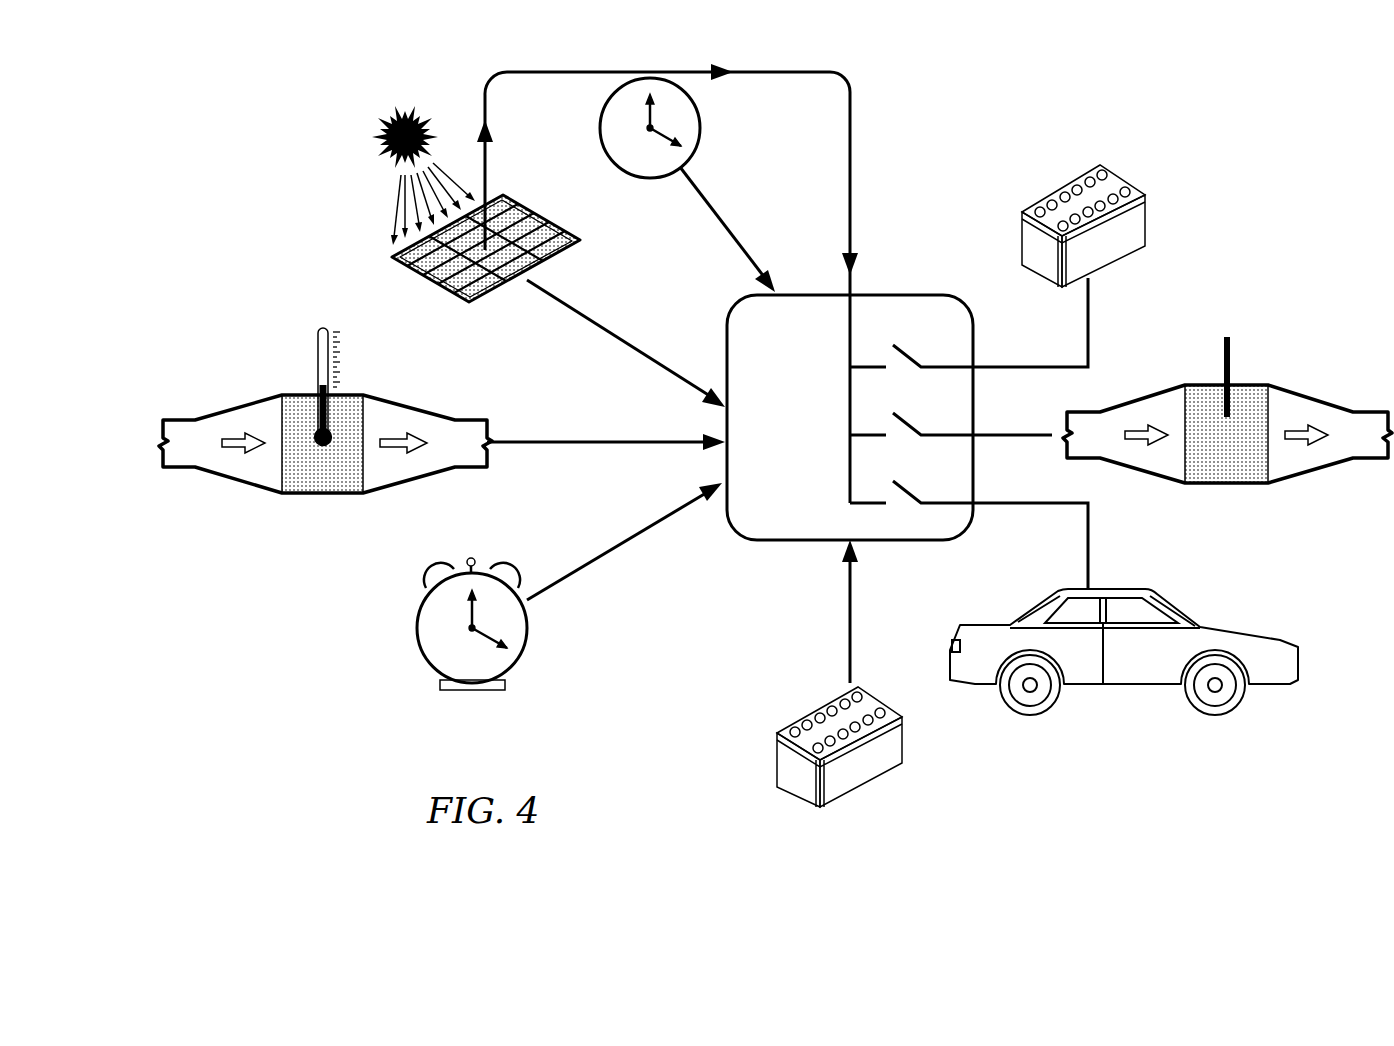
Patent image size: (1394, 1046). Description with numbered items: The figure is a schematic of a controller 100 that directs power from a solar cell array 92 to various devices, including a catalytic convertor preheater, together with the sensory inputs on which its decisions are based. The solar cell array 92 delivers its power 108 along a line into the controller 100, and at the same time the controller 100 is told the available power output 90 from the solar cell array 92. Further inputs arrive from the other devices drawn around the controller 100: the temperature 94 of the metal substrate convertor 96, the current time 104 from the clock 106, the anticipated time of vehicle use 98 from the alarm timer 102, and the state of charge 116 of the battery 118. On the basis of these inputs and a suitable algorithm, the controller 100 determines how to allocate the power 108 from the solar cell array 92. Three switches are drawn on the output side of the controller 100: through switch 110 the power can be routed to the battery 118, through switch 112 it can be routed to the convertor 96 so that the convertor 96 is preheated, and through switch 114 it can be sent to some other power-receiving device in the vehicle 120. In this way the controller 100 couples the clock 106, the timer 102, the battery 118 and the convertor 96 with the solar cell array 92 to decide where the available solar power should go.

The available power output 90 is at (643, 334).
The solar cell array 92 is at (392, 257).
The temperature 94 is at (593, 437).
The metal substrate convertor 96 is at (250, 404).
The anticipated time of vehicle use 98 is at (628, 534).
The controller 100 is at (807, 417).
The timer 102 is at (418, 633).
The current time 104 is at (762, 207).
The clock 106 is at (700, 128).
The power 108 is at (665, 67).
The switch 110 is at (967, 363).
The switch 112 is at (967, 431).
The switch 114 is at (967, 498).
The state of charge 116 is at (900, 644).
The battery 118 is at (1147, 222).
The vehicle 120 is at (1180, 612).